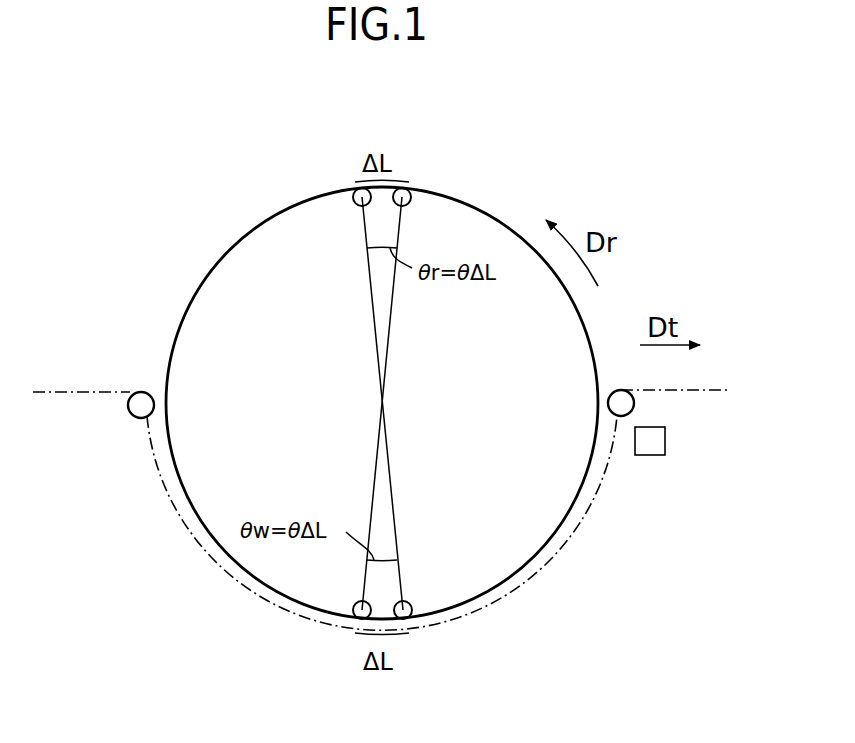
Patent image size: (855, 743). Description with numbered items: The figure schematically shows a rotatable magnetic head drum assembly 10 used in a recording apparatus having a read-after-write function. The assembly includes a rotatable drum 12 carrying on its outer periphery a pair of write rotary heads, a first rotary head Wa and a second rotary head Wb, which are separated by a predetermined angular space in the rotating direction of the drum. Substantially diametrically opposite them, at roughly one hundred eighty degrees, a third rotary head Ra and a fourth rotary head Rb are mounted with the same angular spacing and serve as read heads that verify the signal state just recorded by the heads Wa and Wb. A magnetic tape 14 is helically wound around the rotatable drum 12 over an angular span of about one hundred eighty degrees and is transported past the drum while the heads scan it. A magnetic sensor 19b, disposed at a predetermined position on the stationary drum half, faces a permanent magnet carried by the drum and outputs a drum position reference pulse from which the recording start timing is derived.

The rotatable magnetic head drum assembly 10 is at (662, 153).
The rotatable drum 12 is at (236, 240).
The magnetic tape 14 is at (715, 390).
The magnetic sensor 19b is at (650, 455).
The third rotary head Ra is at (343, 186).
The fourth rotary head Rb is at (421, 188).
The first rotary head Wa is at (417, 620).
The second rotary head Wb is at (346, 618).